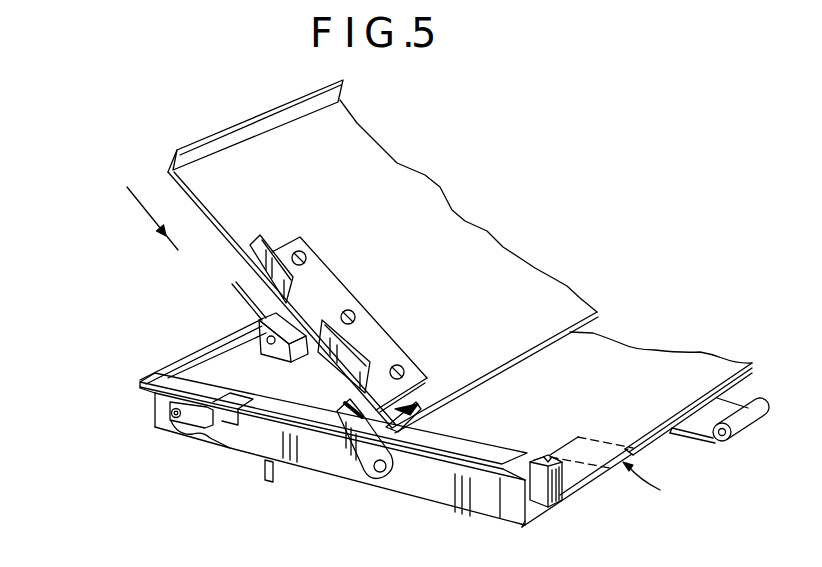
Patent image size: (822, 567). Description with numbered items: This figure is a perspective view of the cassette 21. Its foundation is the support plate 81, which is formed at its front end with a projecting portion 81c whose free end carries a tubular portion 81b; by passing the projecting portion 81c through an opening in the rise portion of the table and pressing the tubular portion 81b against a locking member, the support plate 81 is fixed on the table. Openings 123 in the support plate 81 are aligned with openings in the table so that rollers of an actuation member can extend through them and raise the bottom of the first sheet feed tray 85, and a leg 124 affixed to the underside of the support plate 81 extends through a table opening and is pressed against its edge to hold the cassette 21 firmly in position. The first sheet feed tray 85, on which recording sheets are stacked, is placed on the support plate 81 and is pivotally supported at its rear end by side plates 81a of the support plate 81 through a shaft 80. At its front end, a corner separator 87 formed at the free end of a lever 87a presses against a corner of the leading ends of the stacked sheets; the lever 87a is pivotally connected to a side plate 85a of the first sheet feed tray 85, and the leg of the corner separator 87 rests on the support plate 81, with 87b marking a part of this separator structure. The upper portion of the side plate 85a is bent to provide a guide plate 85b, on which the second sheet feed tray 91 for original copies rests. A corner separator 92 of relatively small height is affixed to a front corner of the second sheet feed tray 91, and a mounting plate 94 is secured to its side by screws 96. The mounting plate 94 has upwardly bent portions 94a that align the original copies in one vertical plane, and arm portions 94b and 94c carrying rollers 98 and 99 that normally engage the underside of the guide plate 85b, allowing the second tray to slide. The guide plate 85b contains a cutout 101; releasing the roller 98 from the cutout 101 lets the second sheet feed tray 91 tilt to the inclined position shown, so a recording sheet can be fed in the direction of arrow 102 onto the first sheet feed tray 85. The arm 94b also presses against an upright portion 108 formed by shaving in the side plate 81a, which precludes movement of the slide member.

The cassette 21 is at (433, 171).
The second sheet feed tray 91 is at (357, 124).
The arrow 102 is at (142, 218).
The mounting plate 94 is at (312, 258).
The screw 96 is at (350, 312).
The upwardly bent portion 94a is at (330, 318).
The arm portion 94b is at (278, 320).
The roller 98 is at (264, 355).
The corner separator 92 is at (412, 401).
The arm portion 94c is at (353, 463).
The roller 99 is at (383, 480).
The first sheet feed tray 85 is at (650, 351).
The side plate 85a is at (160, 393).
The guide plate 85b is at (167, 372).
The shaft 80 is at (170, 411).
The upright portion 108 is at (183, 431).
The support plate 81 is at (530, 520).
The side plate 81a is at (230, 445).
The tubular portion 81b is at (743, 420).
The projecting portion 81c is at (700, 425).
The cutout 101 is at (242, 408).
The leg 124 is at (278, 472).
The corner separator 87 is at (543, 457).
The lever 87a is at (517, 473).
The bracket strip 87b is at (558, 503).
The opening 123 is at (665, 484).